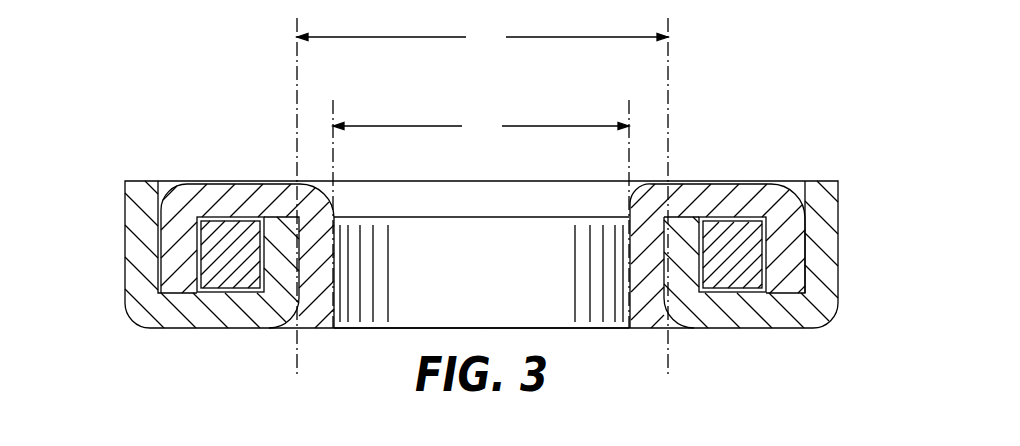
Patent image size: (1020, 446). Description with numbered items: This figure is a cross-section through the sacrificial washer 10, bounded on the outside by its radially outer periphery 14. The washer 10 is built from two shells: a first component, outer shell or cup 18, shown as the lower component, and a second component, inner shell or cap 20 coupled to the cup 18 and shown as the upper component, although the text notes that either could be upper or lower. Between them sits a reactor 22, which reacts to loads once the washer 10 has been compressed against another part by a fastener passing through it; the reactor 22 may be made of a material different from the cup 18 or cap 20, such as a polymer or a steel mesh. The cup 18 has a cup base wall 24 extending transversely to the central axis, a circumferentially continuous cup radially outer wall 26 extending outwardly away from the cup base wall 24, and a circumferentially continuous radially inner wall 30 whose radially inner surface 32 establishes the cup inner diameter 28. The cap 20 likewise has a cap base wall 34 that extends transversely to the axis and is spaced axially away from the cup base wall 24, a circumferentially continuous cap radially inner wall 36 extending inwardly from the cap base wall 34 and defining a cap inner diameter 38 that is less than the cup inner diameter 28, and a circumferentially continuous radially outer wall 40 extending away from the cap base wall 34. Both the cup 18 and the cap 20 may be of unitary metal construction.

The sacrificial washer 10 is at (743, 138).
The radially outer periphery 14 is at (842, 270).
The cup 18 is at (126, 322).
The cap 20 is at (748, 205).
The reactor 22 is at (741, 293).
The cup base wall 24 is at (234, 308).
The cup radially outer wall 26 is at (137, 227).
The cup inner diameter 28 is at (482, 198).
The radially inner wall 30 is at (687, 245).
The radially inner surface 32 is at (667, 278).
The cap base wall 34 is at (223, 193).
The cap radially inner wall 36 is at (641, 308).
The cap inner diameter 38 is at (481, 214).
The radially outer wall 40 is at (788, 247).